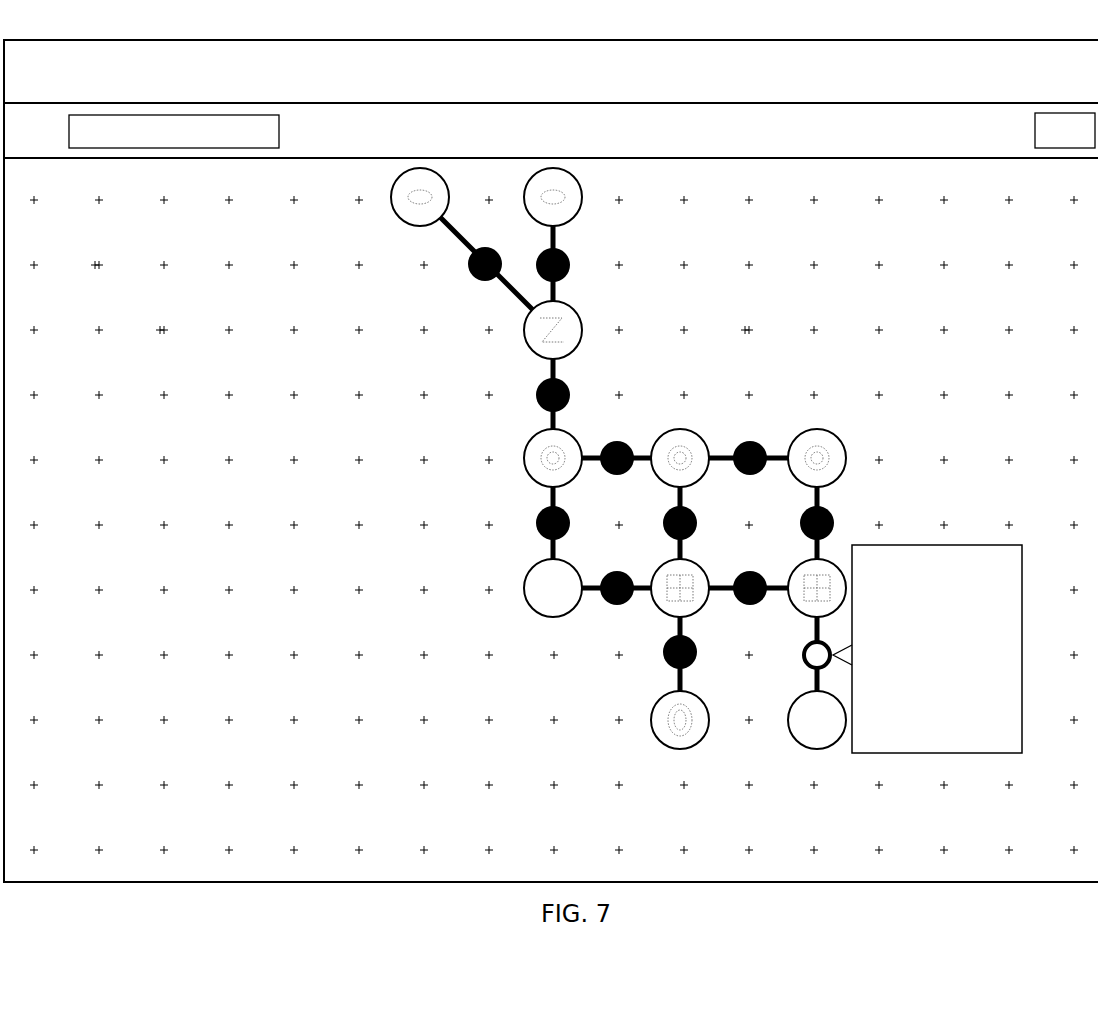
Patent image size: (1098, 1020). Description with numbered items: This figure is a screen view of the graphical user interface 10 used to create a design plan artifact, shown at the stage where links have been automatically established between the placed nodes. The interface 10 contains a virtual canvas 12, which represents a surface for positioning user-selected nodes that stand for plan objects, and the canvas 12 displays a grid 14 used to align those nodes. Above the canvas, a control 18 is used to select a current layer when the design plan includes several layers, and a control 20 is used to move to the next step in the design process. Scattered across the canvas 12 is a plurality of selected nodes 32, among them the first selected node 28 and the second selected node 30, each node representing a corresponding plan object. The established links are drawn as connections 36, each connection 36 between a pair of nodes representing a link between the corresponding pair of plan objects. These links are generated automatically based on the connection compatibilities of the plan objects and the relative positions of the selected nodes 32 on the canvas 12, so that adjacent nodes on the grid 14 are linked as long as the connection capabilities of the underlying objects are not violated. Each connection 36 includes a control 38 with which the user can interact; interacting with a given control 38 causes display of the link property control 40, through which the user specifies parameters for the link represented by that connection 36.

The graphical user interface 10 is at (395, 38).
The virtual canvas 12 is at (984, 243).
The grid 14 is at (164, 328).
The control 18 is at (250, 114).
The control 20 is at (1050, 112).
The node 28 is at (552, 559).
The node 30 is at (813, 691).
The plurality of selected nodes 32 is at (758, 325).
The connection 36 is at (780, 455).
The control 38 is at (606, 604).
The link property control 40 is at (967, 544).